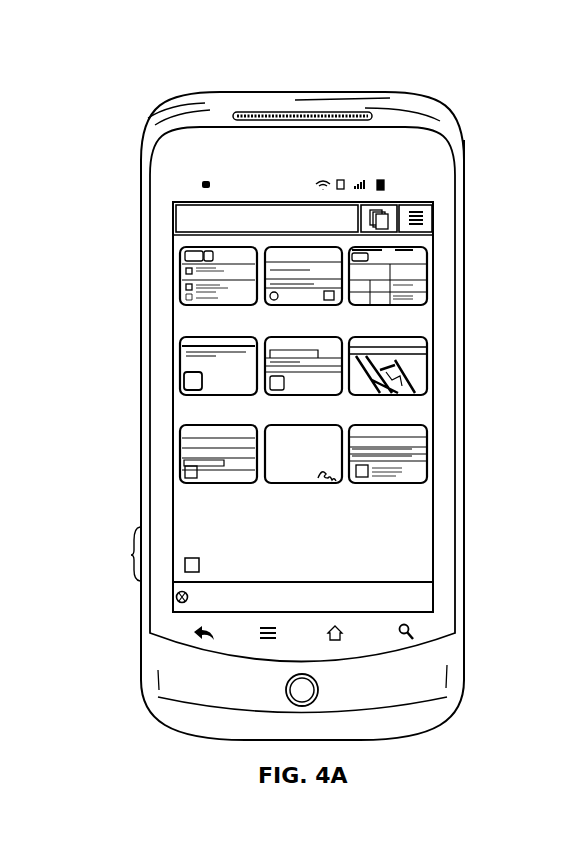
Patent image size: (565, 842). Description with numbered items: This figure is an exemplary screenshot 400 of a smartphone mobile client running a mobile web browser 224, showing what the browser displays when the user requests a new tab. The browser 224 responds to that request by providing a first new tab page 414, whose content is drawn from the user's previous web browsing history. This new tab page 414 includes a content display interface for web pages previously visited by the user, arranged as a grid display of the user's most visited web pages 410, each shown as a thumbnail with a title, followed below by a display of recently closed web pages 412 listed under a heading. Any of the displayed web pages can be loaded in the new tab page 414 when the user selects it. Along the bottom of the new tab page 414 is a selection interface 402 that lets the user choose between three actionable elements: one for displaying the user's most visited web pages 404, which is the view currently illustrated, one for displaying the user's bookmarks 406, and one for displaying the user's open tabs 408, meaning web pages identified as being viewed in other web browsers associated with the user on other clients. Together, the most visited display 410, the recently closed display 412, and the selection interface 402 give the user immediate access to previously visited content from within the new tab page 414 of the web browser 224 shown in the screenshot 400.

The screenshot 400 is at (131, 90).
The web browser 224 is at (467, 163).
The selection interface 402 is at (257, 612).
The actionable element for displaying most visited web pages 404 is at (293, 588).
The actionable element for displaying bookmarks 406 is at (343, 590).
The actionable element for displaying open tabs 408 is at (422, 590).
The display of most visited web pages 410 is at (140, 235).
The display of recently closed web pages 412 is at (115, 554).
The new tab page 414 is at (184, 248).